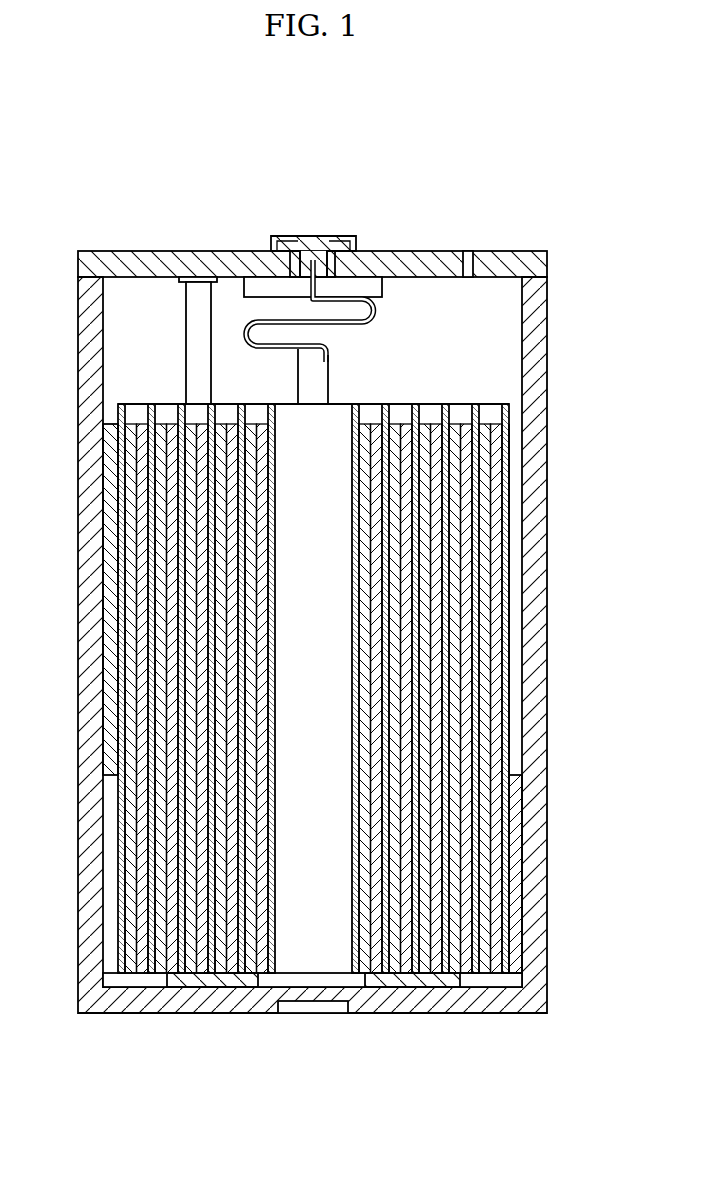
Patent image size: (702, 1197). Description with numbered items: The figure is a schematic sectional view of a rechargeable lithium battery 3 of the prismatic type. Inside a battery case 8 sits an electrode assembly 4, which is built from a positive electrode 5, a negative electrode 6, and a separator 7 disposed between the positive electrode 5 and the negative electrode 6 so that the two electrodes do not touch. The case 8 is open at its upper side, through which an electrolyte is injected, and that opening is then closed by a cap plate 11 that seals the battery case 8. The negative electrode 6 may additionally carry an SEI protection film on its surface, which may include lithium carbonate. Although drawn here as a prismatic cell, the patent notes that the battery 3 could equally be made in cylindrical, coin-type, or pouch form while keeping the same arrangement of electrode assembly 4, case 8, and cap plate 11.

The rechargeable lithium battery 3 is at (526, 223).
The electrode assembly 4 is at (444, 396).
The positive electrode 5 is at (497, 813).
The negative electrode 6 is at (167, 806).
The separator 7 is at (150, 853).
The battery case 8 is at (78, 352).
The cap plate 11 is at (402, 258).